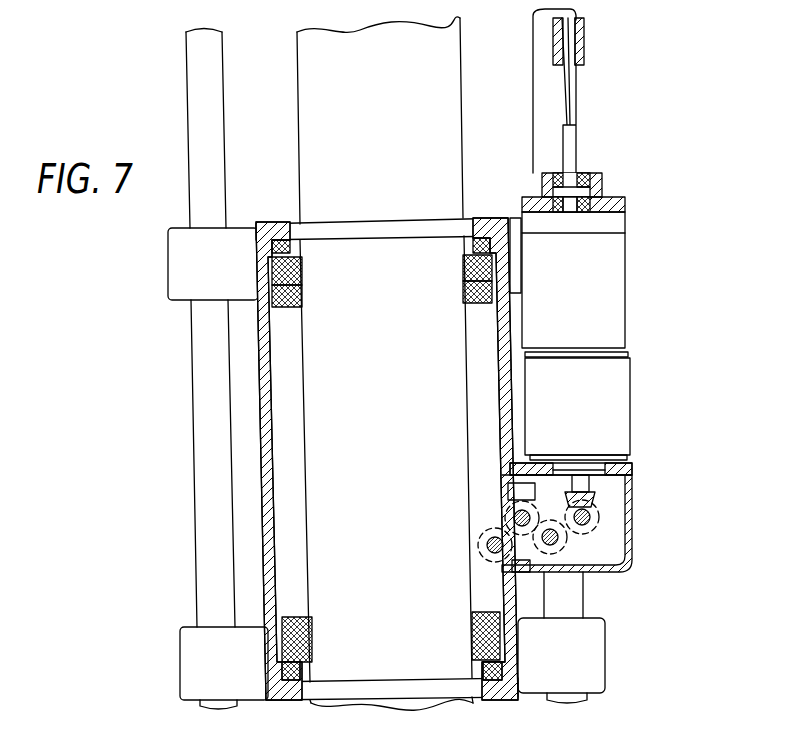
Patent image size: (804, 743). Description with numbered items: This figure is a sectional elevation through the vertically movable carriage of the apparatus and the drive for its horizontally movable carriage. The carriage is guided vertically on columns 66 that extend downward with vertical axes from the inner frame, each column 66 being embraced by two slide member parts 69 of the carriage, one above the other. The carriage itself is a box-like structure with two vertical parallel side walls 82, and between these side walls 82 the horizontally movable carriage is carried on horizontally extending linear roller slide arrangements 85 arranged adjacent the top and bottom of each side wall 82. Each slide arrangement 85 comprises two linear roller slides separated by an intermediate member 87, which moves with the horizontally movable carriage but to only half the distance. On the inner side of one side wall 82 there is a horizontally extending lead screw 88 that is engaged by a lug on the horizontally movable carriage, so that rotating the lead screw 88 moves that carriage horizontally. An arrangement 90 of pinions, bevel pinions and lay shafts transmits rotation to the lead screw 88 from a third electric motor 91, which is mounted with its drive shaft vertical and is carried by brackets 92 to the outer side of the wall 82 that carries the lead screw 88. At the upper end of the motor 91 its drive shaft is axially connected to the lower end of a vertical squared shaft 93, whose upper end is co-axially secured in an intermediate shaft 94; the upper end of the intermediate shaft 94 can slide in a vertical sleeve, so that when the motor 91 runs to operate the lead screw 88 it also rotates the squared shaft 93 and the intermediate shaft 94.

The column 66 is at (197, 195).
The slide member part 69 is at (195, 660).
The side wall 82 is at (267, 370).
The linear roller slide arrangement 85 is at (310, 270).
The intermediate member 87 is at (305, 290).
The lead screw 88 is at (488, 547).
The arrangement of pinions, bevel pinions and lay shafts 90 is at (607, 545).
The third electric motor 91 is at (612, 313).
The bracket 92 is at (515, 262).
The vertical squared shaft 93 is at (572, 118).
The intermediate shaft 94 is at (585, 43).